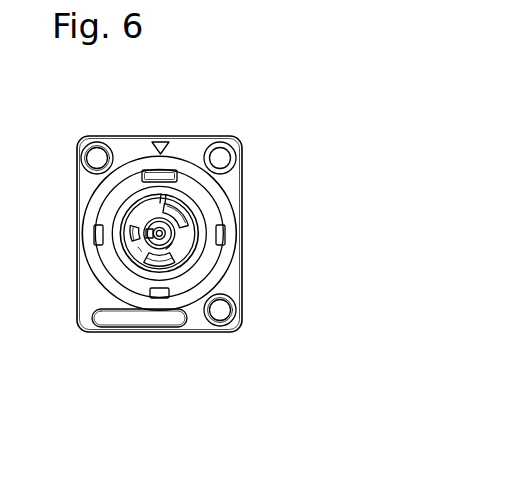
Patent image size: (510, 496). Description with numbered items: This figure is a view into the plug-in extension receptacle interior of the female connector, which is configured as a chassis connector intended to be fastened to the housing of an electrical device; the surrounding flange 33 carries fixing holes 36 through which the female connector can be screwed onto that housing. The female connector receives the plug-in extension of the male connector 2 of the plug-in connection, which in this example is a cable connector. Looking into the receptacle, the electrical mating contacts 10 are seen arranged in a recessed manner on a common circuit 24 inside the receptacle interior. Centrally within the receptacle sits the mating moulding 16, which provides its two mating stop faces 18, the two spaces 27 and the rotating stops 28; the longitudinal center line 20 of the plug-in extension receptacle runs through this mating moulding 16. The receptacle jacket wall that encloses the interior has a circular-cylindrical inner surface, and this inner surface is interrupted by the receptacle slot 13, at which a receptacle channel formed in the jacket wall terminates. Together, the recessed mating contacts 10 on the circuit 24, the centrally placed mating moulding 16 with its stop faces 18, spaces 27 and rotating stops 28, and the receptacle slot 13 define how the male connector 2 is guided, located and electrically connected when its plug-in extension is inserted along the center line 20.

The male connector 2 is at (252, 188).
The electrical mating contacts 10 is at (190, 214).
The receptacle slot 13 is at (163, 198).
The mating moulding 16 is at (133, 253).
The mating stop faces 18 is at (183, 211).
The longitudinal center line 20 is at (168, 232).
The common circuit 24 is at (168, 243).
The spaces 27 is at (145, 207).
The rotating stops 28 is at (168, 207).
The flange 33 is at (176, 203).
The fixing holes 36 is at (97, 158).